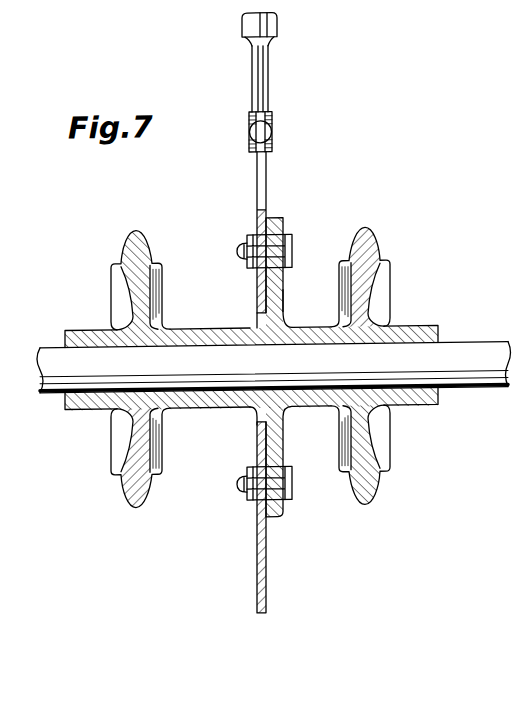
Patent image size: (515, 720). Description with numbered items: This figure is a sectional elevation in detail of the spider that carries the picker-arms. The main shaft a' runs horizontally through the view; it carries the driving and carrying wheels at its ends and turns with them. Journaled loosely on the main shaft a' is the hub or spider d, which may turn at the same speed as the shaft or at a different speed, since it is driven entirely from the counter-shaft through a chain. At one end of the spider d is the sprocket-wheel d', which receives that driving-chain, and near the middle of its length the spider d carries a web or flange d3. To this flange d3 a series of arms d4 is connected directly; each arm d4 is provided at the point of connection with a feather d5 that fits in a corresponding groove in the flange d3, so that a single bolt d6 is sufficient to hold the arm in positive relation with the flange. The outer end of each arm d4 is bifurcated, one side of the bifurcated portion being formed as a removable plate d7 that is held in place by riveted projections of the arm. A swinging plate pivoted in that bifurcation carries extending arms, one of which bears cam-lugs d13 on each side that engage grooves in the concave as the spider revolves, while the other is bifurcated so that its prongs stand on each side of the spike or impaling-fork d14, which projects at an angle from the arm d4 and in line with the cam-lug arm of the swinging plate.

The main shaft a' is at (274, 363).
The hub or spider d is at (251, 343).
The sprocket-wheel d' is at (118, 280).
The removable plate d7 is at (381, 297).
The web or flange d3 is at (284, 288).
The arm d4 is at (257, 563).
The feather d5 is at (268, 217).
The bolt d6 is at (220, 495).
The cam-lug d13 is at (310, 34).
The spike or impaling-fork d14 is at (257, 72).